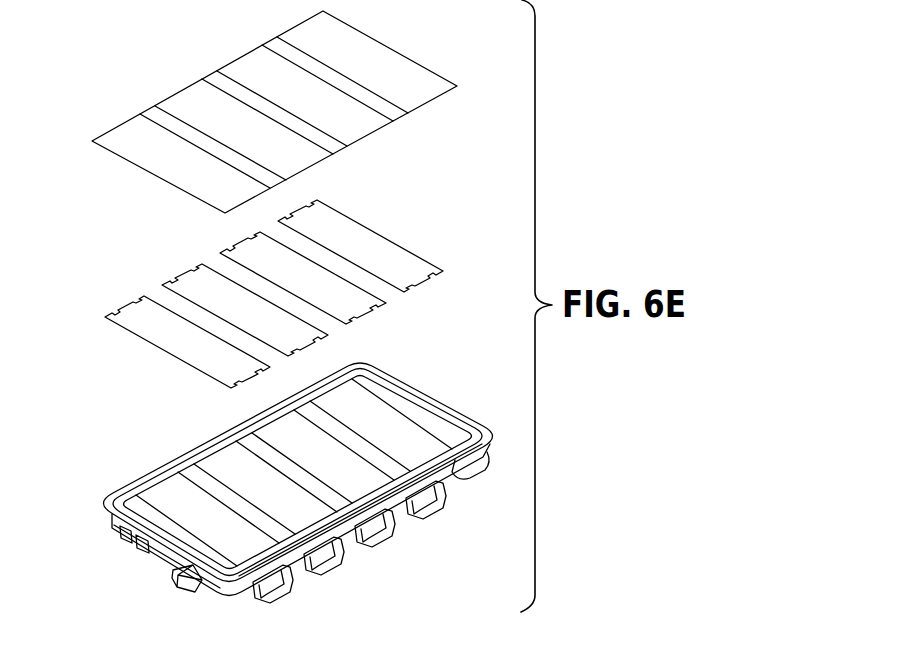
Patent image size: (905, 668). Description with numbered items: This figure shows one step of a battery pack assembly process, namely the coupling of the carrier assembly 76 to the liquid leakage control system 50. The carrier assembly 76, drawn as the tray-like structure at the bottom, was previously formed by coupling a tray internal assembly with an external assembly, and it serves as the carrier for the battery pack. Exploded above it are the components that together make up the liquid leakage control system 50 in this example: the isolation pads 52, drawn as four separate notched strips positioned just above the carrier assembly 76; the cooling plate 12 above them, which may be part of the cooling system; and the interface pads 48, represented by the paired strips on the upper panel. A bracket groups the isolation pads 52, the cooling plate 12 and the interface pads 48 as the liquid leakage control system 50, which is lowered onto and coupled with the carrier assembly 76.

The cooling plate 12 is at (152, 113).
The interface pad 48 is at (405, 83).
The liquid leakage control system 50 is at (88, 58).
The isolation pad 52 is at (130, 312).
The carrier assembly 76 is at (152, 443).